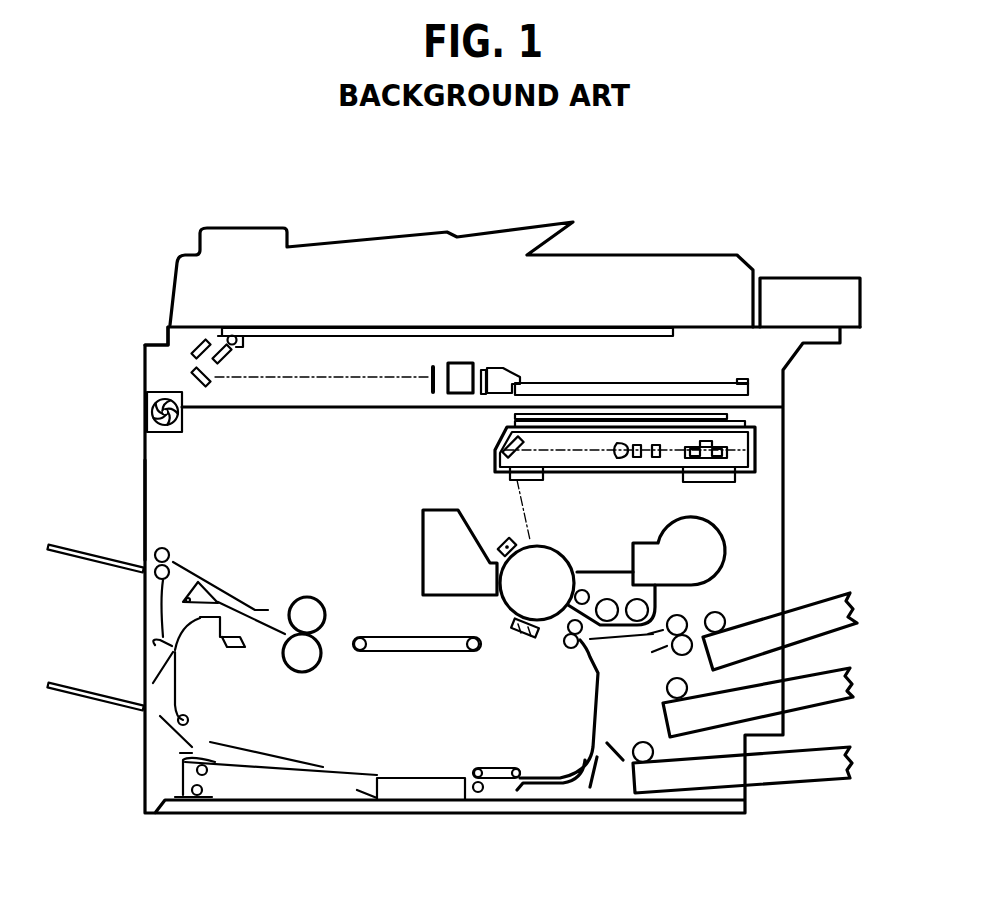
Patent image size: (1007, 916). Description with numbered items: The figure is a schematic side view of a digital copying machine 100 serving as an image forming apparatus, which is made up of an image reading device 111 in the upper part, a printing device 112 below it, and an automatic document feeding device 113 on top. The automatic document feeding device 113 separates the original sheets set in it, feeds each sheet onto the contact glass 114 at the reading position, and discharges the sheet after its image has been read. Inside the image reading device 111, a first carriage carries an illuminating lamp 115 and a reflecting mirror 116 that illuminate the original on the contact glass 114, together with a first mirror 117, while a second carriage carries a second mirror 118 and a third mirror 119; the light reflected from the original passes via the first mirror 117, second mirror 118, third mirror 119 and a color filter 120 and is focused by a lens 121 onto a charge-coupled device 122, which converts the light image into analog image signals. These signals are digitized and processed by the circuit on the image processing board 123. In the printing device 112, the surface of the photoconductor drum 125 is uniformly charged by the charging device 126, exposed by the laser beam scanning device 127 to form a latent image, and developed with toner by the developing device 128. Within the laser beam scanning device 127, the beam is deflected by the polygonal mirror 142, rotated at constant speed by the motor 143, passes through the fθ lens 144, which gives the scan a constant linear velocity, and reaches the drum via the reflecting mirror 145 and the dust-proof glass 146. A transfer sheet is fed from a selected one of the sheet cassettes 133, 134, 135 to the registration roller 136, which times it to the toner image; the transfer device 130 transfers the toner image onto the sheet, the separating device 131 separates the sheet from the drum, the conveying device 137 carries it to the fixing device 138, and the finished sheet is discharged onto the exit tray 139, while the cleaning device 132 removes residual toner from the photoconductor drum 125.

The digital copying machine 100 is at (808, 411).
The image reading device 111 is at (136, 359).
The printing device 112 is at (122, 492).
The automatic document feeding device 113 is at (657, 226).
The contact glass 114 is at (660, 326).
The illuminating lamp 115 is at (233, 336).
The reflecting mirror 116 is at (243, 342).
The first mirror 117 is at (214, 340).
The second mirror 118 is at (193, 344).
The third mirror 119 is at (198, 374).
The color filter 120 is at (428, 365).
The lens 121 is at (464, 365).
The charge-coupled device 122 is at (483, 368).
The image processing board 123 is at (712, 385).
The photoconductor drum 125 is at (514, 597).
The charging device 126 is at (503, 537).
The laser beam scanning device 127 is at (653, 486).
The developing device 128 is at (688, 603).
The transfer device 130 is at (535, 640).
The separating device 131 is at (514, 639).
The cleaning device 132 is at (423, 540).
The sheet cassette 133 is at (793, 637).
The sheet cassette 134 is at (795, 702).
The sheet cassette 135 is at (793, 765).
The registration roller 136 is at (582, 643).
The conveying device 137 is at (373, 653).
The fixing device 138 is at (300, 672).
The exit tray 139 is at (75, 556).
The polygonal mirror 142 is at (730, 452).
The motor 143 is at (733, 483).
The fθ lens 144 is at (620, 458).
The reflecting mirror 145 is at (497, 436).
The dust-proof glass 146 is at (508, 478).